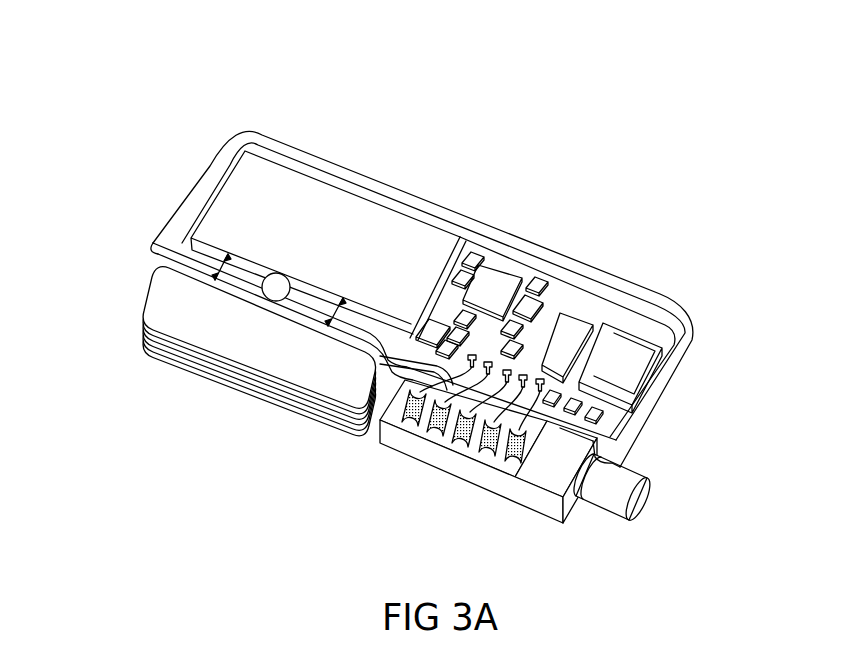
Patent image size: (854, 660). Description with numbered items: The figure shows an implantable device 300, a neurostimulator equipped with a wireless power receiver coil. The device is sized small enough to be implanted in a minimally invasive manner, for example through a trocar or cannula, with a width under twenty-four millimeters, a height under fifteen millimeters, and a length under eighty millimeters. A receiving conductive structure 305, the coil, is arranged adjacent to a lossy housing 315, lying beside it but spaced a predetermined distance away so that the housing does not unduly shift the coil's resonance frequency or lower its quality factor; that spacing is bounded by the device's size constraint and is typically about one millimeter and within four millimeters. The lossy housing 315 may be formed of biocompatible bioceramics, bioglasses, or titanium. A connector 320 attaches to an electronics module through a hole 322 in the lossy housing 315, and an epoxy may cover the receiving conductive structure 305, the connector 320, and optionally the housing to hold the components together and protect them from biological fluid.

The implantable device 300 is at (100, 83).
The receiving conductive structure 305 is at (247, 331).
The lossy housing 315 is at (483, 234).
The connector 320 is at (422, 420).
The hole 322 is at (543, 370).